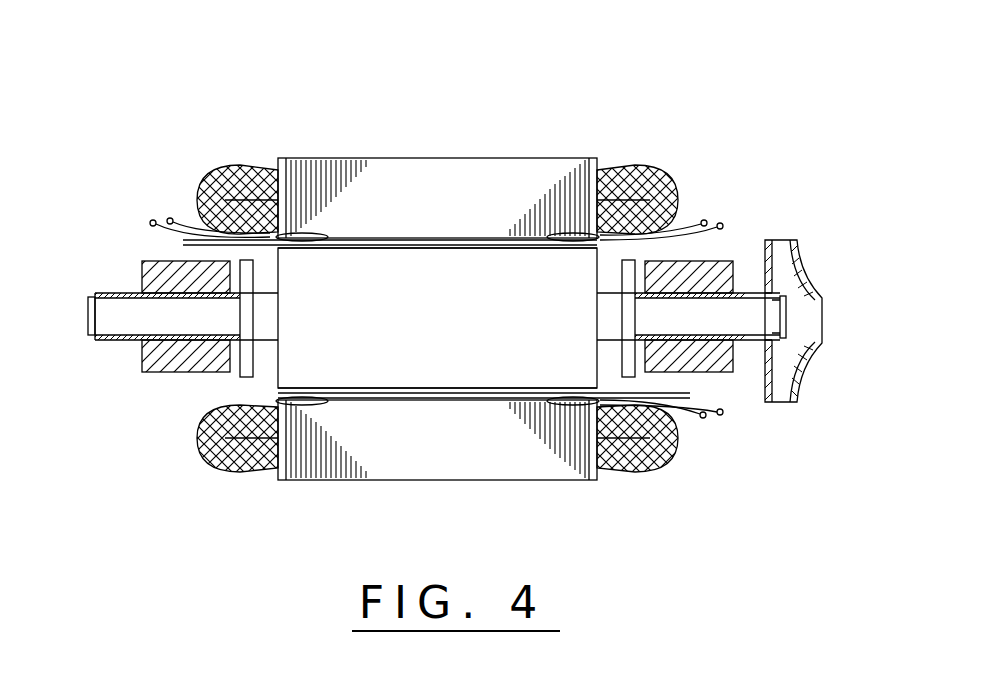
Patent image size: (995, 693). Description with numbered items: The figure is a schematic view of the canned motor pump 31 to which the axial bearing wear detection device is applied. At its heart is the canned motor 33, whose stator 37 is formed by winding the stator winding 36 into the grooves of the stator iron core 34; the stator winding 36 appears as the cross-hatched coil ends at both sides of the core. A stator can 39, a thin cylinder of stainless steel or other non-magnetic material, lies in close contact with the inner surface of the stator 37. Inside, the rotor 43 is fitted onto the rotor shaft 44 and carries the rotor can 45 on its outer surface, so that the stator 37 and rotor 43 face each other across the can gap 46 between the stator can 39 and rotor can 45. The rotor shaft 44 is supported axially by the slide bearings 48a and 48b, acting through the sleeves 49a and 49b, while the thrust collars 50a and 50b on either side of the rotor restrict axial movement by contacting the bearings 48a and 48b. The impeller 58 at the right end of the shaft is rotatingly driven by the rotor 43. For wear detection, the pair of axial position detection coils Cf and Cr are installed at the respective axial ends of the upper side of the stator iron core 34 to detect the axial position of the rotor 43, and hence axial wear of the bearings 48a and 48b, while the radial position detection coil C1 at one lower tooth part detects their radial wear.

The canned motor pump 31 is at (710, 98).
The canned motor 33 is at (506, 150).
The stator iron core 34 is at (286, 160).
The stator winding 36 is at (222, 178).
The stator 37 is at (320, 160).
The stator can 39 is at (481, 240).
The rotor 43 is at (600, 262).
The rotor shaft 44 is at (115, 315).
The rotor can 45 is at (441, 258).
The can gap 46 is at (393, 250).
The bearing 48a is at (727, 368).
The bearing 48b is at (148, 266).
The sleeve 49a is at (734, 293).
The sleeve 49b is at (190, 346).
The thrust collar 50a is at (628, 372).
The thrust collar 50b is at (246, 372).
The impeller 58 is at (797, 272).
The axial position detection coil Cr is at (207, 213).
The axial position detection coil Cf is at (662, 215).
The radial position detection coil C1 is at (664, 426).